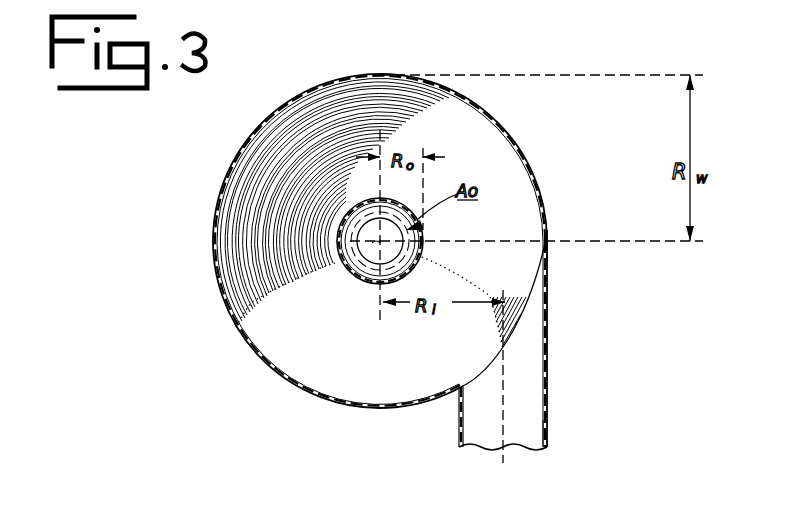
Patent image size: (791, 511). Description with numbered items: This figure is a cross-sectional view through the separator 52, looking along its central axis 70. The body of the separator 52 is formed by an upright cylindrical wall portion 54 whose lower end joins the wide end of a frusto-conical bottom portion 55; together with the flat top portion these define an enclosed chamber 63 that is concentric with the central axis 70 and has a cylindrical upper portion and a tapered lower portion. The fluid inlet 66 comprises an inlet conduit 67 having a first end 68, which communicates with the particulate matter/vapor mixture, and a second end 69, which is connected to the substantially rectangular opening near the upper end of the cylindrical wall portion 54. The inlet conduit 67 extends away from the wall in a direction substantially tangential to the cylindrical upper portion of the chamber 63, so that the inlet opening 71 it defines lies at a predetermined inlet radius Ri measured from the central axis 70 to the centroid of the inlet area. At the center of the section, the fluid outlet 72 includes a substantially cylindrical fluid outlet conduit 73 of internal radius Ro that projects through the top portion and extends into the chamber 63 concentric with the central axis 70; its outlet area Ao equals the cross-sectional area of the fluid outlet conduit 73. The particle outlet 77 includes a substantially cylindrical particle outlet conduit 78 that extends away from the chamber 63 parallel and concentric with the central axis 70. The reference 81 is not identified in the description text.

The separator 52 is at (152, 292).
The upright cylindrical wall portion 54 is at (303, 409).
The frusto-conical bottom portion 55 is at (308, 110).
The enclosed chamber 63 is at (307, 320).
The fluid inlet 66 is at (570, 338).
The inlet conduit 67 is at (549, 380).
The first end 68 is at (549, 445).
The second end 69 is at (549, 257).
The central axis 70 is at (380, 241).
The inlet opening 71 is at (485, 378).
The fluid outlet 72 is at (436, 249).
The fluid outlet conduit 73 is at (405, 205).
The particle outlet 77 is at (427, 223).
The particle outlet conduit 78 is at (364, 268).
The shaft 81 is at (370, 234).